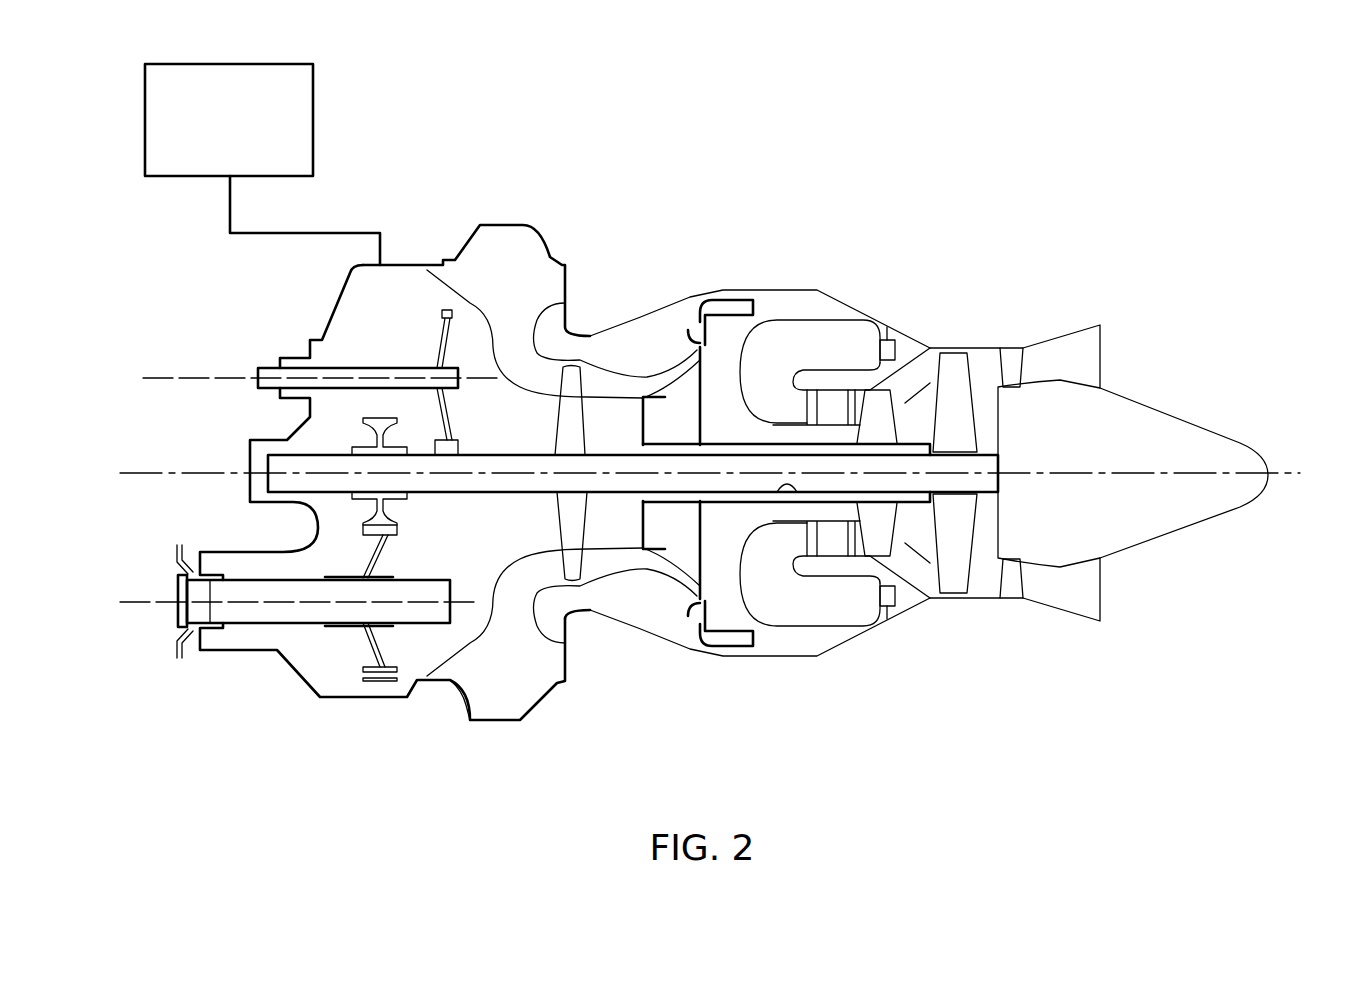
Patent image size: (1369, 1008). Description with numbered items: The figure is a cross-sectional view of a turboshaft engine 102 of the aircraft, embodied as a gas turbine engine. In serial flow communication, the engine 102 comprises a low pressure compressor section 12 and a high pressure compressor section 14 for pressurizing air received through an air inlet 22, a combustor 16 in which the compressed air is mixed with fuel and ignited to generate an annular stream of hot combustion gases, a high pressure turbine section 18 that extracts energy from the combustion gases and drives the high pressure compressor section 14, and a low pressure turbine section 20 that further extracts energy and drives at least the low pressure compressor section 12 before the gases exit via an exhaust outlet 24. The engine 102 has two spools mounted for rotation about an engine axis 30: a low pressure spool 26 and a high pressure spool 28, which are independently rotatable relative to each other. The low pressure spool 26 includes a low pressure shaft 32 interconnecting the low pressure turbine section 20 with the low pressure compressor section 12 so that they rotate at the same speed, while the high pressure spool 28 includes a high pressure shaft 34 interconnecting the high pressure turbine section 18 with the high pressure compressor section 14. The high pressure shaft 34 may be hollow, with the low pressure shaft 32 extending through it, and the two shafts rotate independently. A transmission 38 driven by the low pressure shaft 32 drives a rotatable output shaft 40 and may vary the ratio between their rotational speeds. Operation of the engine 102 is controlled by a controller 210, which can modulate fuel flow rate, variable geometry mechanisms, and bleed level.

The turboshaft engine 102 is at (1078, 232).
The low pressure compressor section 12 is at (570, 383).
The high pressure compressor section 14 is at (673, 412).
The combustor 16 is at (830, 350).
The high pressure turbine section 18 is at (880, 530).
The low pressure turbine section 20 is at (958, 375).
The air inlet 22 is at (470, 700).
The exhaust outlet 24 is at (1082, 598).
The low pressure spool 26 is at (587, 497).
The high pressure spool 28 is at (698, 503).
The engine axis 30 is at (1330, 470).
The low pressure shaft 32 is at (502, 487).
The high pressure shaft 34 is at (797, 492).
The transmission 38 is at (330, 520).
The output shaft 40 is at (245, 608).
The controller 210 is at (256, 158).